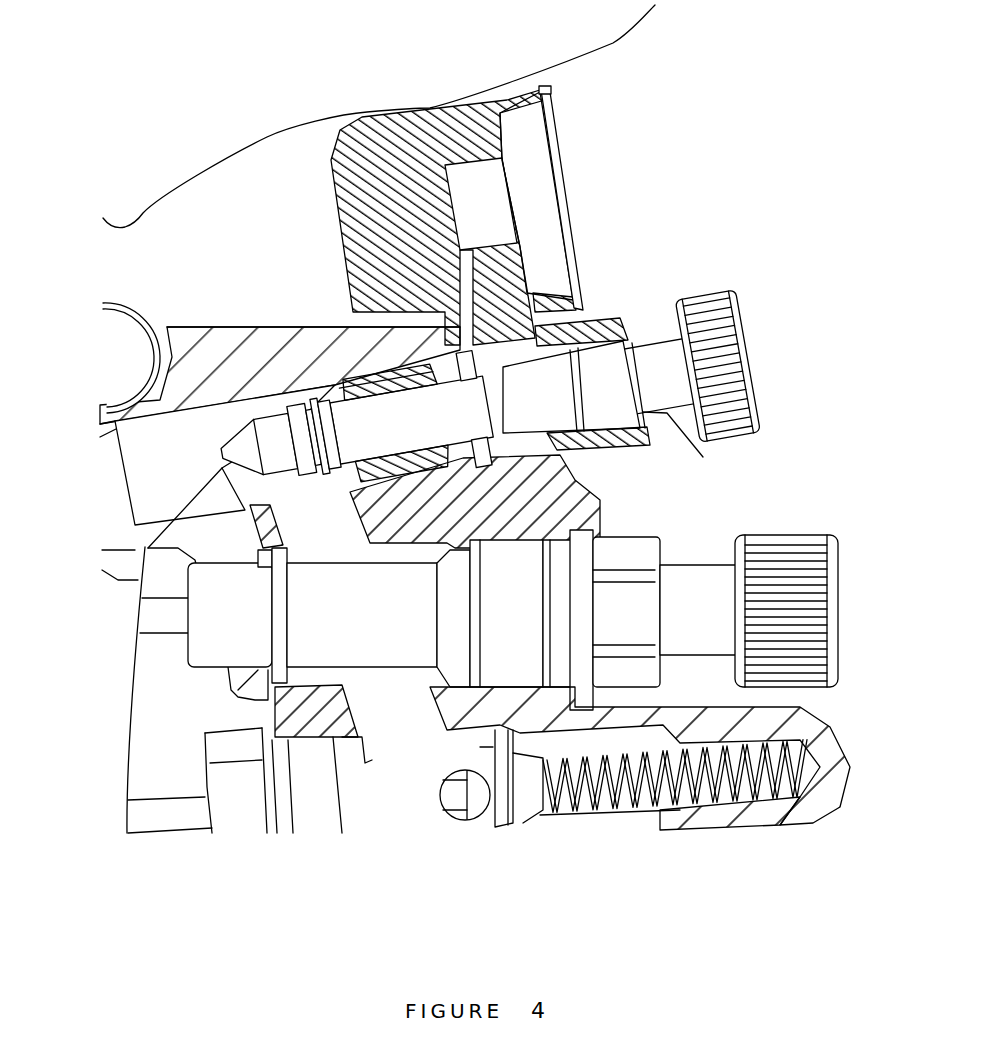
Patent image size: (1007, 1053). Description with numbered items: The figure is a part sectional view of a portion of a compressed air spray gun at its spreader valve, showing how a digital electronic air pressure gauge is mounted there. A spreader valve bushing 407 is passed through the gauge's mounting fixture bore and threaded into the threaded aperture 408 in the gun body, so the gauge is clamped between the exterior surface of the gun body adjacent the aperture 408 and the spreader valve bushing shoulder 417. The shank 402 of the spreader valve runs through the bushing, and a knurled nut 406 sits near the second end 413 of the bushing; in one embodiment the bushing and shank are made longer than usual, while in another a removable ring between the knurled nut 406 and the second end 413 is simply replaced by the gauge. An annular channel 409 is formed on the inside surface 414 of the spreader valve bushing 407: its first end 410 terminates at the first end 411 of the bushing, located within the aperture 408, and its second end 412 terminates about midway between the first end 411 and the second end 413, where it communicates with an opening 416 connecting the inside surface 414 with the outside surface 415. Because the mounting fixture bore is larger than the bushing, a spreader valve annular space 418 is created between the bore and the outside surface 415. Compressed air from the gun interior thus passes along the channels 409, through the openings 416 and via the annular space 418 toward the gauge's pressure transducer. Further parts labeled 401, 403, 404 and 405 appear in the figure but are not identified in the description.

The valve body 401 is at (411, 420).
The shank 402 is at (278, 443).
The housing lower portion 403 is at (217, 663).
The seat plate 404 is at (198, 609).
The housing flange 405 is at (749, 439).
The knurled nut 406 is at (717, 366).
The spreader valve bushing 407 is at (673, 293).
The threaded aperture 408 is at (587, 181).
The annular channel 409 is at (395, 422).
The first end of annular channel 410 is at (603, 501).
The first end of spreader valve bushing 411 is at (540, 615).
The second end of annular channel 412 is at (219, 342).
The second end of spreader valve bushing 413 is at (659, 376).
The inside surface of spreader valve bushing 414 is at (201, 347).
The outside surface of spreader valve bushing 415 is at (474, 409).
The opening 416 is at (656, 203).
The spreader valve bushing shoulder 417 is at (696, 222).
The spreader valve annular space 418 is at (706, 339).